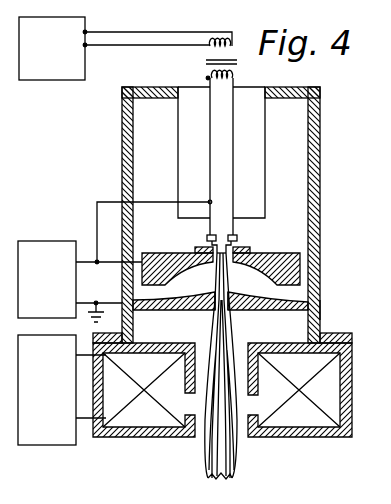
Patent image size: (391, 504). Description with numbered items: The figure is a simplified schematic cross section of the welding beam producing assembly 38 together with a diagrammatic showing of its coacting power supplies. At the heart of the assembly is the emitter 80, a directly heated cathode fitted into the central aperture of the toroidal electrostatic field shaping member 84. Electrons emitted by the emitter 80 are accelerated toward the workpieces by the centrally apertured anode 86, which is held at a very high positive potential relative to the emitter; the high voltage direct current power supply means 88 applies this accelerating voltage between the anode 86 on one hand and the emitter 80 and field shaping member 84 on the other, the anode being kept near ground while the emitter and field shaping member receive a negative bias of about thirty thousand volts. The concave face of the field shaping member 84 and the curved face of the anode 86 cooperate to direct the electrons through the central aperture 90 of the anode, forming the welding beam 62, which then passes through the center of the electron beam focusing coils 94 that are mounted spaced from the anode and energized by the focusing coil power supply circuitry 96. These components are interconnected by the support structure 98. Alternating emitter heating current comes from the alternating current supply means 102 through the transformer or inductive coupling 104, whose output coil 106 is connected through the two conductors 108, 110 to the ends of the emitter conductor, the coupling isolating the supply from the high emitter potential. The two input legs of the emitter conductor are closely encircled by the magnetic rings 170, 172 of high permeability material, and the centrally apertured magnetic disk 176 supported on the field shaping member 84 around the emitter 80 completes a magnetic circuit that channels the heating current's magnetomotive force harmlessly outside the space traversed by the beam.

The welding beam producing assembly 38 is at (332, 250).
The welding beam 62 is at (233, 462).
The emitter 80 is at (213, 257).
The electrostatic field shaping member 84 is at (292, 237).
The anode 86 is at (259, 308).
The high voltage direct current power supply means 88 is at (46, 245).
The central aperture 90 is at (214, 308).
The electron beam focusing coils 94 is at (128, 407).
The focusing coil power supply circuitry 96 is at (44, 446).
The support structure 98 is at (320, 303).
The alternating current supply means 102 is at (57, 78).
The transformer or inductive coupling 104 is at (202, 62).
The output coil 106 is at (232, 76).
The conductor 108 is at (210, 150).
The conductor 110 is at (233, 156).
The magnetic band or ring 170 is at (207, 238).
The magnetic band or ring 172 is at (236, 235).
The centrally apertured magnetic disk 176 is at (243, 250).